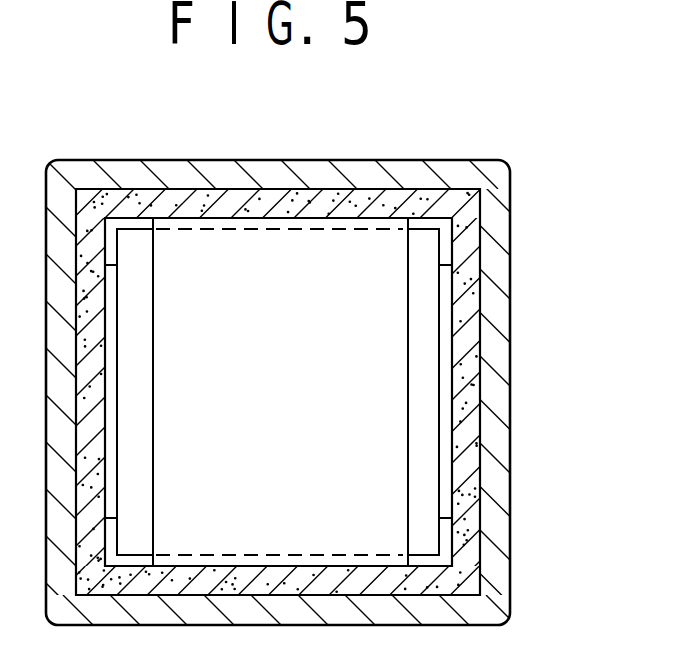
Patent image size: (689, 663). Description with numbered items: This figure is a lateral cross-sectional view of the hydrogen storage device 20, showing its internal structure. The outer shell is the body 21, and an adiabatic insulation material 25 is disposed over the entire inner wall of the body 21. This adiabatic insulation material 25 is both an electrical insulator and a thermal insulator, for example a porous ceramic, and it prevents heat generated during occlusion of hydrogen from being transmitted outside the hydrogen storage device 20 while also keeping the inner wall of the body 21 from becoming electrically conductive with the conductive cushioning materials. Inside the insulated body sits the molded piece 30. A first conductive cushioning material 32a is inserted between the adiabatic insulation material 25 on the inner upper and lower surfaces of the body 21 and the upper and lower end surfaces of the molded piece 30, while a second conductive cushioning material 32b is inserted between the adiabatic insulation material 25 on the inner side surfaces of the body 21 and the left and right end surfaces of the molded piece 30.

The hydrogen storage device 20 is at (344, 355).
The body 21 is at (308, 161).
The adiabatic insulation material 25 is at (365, 200).
The molded piece 30 is at (425, 307).
The first conductive cushioning material 32a is at (318, 400).
The second conductive cushioning material 32b is at (435, 358).